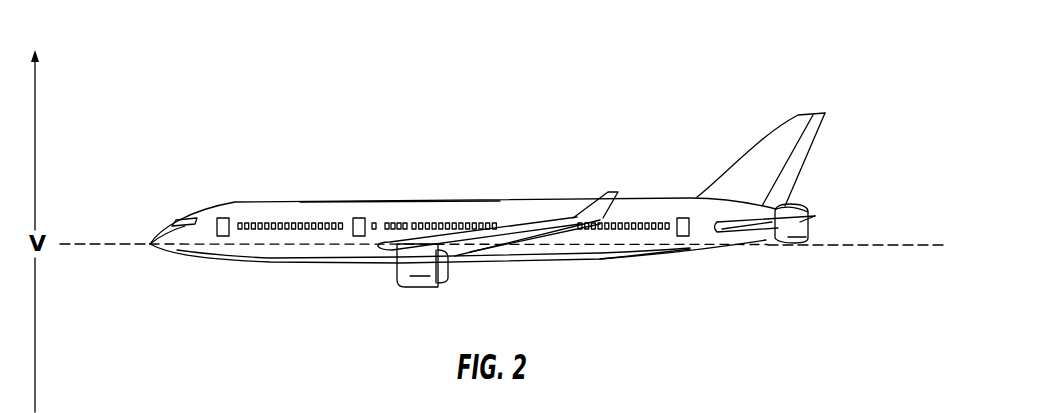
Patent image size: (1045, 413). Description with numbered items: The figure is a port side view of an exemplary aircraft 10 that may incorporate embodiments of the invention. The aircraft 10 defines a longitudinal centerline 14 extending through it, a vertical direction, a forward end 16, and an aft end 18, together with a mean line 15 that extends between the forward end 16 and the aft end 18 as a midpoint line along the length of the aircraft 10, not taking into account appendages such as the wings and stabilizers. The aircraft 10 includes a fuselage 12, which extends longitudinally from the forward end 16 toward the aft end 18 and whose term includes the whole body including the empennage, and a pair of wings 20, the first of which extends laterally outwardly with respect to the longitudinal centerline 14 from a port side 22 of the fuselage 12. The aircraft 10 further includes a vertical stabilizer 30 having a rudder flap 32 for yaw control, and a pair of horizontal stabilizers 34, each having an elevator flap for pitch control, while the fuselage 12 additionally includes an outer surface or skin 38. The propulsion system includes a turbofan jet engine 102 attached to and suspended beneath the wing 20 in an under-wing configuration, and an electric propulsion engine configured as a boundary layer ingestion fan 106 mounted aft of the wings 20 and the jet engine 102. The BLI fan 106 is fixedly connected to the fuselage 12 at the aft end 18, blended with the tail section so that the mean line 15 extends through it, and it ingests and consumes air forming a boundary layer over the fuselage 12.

The aircraft 10 is at (199, 149).
The fuselage 12 is at (247, 253).
The longitudinal centerline 14 is at (72, 246).
The mean line 15 is at (650, 238).
The forward end 16 is at (152, 262).
The aft end 18 is at (744, 261).
The wings 20 is at (545, 228).
The port side 22 is at (606, 255).
The vertical stabilizer 30 is at (802, 148).
The rudder flap 32 is at (807, 145).
The horizontal stabilizers 34 is at (770, 243).
The outer surface or skin 38 is at (403, 193).
The turbofan jet engine 102 is at (403, 292).
The boundary layer ingestion (BLI) fan 106 is at (810, 193).